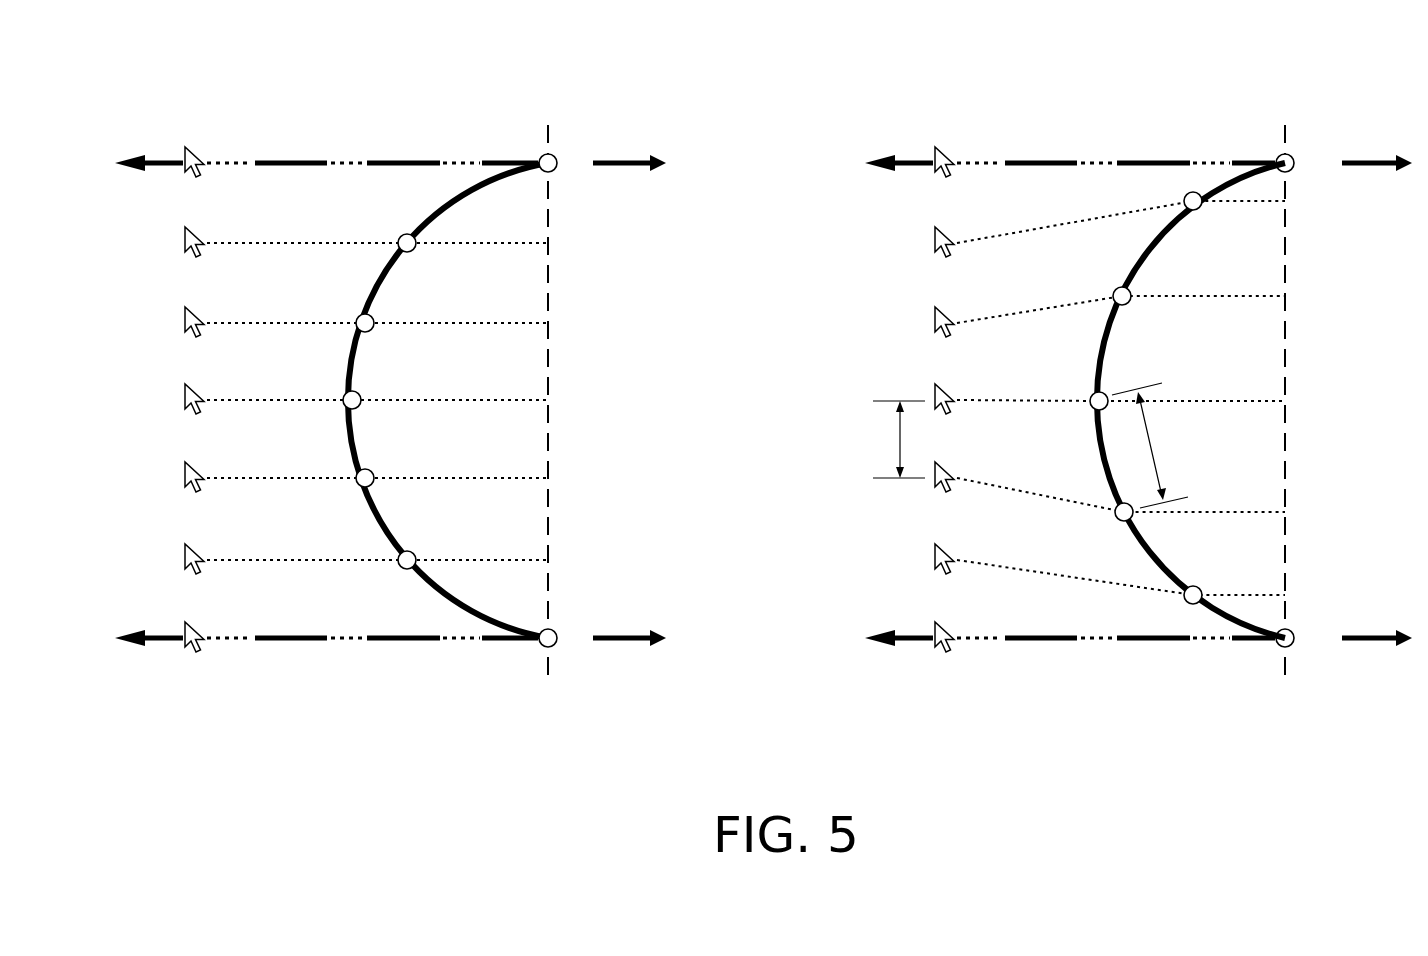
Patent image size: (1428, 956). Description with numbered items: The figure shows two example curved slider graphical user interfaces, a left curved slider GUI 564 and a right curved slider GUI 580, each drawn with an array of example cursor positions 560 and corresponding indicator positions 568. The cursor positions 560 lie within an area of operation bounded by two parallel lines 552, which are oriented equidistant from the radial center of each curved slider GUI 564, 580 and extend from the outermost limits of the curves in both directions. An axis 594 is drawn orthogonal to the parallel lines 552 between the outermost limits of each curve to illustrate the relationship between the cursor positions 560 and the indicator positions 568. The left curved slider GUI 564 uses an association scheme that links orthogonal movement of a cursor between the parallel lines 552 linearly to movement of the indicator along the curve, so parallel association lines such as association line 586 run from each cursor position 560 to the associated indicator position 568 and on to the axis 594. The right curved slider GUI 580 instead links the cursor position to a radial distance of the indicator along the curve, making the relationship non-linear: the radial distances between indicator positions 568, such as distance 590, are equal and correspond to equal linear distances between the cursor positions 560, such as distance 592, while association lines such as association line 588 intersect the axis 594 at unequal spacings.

The parallel lines 552 is at (312, 163).
The cursor positions 560 is at (212, 110).
The left curved slider GUI 564 is at (436, 214).
The indicator positions 568 is at (581, 138).
The right curved slider GUI 580 is at (1170, 226).
The association line 586 is at (233, 400).
The association line 588 is at (1250, 512).
The distance 590 is at (1152, 448).
The distance 592 is at (900, 440).
The axis 594 is at (550, 293).